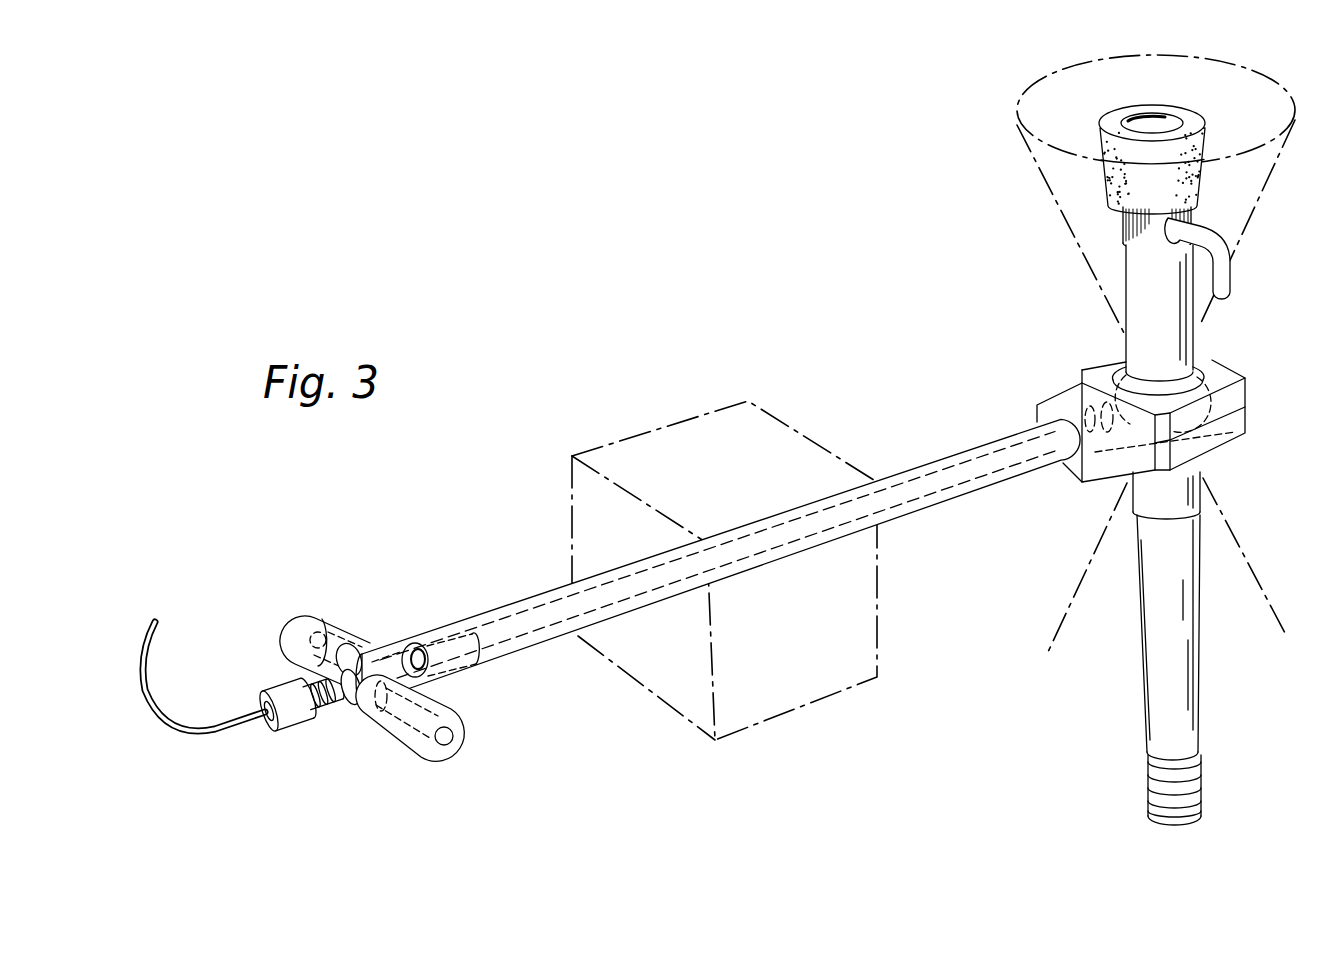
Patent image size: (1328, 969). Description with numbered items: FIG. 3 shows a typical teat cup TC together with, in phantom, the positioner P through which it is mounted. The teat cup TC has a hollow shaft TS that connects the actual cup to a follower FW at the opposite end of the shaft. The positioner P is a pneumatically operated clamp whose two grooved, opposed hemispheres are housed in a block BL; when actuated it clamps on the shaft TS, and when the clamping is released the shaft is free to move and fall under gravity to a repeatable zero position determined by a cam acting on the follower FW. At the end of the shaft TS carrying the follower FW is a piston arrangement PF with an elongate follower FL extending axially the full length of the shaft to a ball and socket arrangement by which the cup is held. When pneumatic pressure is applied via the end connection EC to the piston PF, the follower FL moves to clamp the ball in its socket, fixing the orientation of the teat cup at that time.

The positioner P is at (817, 446).
The teat cup TC is at (1133, 684).
The block BL is at (1200, 372).
The shaft TS is at (538, 594).
The elongate follower FL is at (533, 622).
The piston arrangement PF is at (446, 636).
The end connector EC is at (336, 708).
The follower FW is at (401, 737).